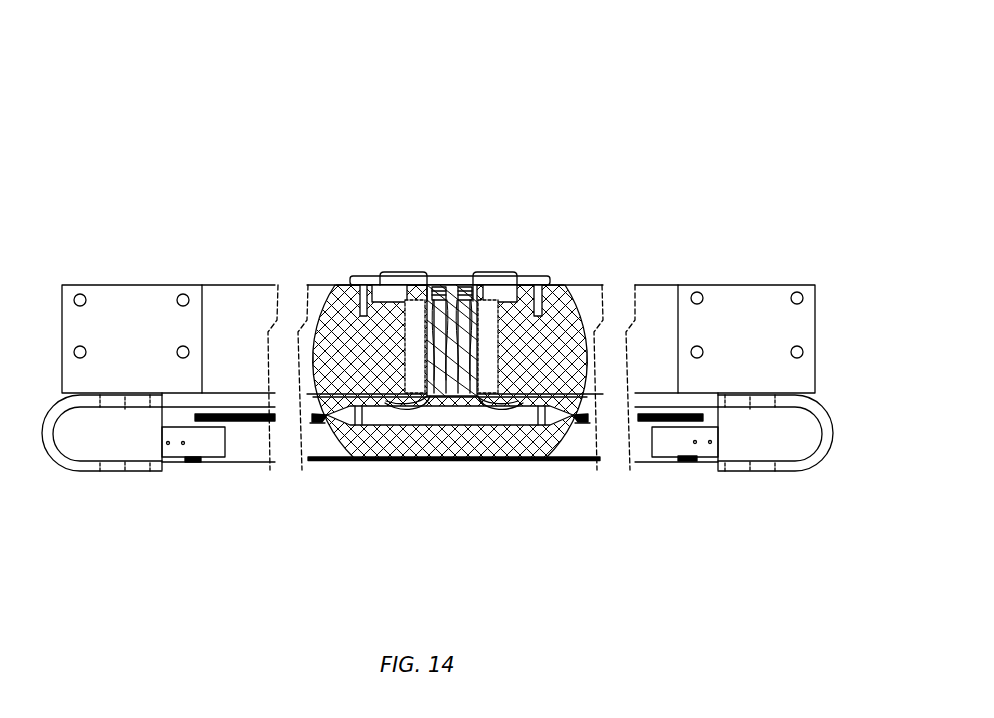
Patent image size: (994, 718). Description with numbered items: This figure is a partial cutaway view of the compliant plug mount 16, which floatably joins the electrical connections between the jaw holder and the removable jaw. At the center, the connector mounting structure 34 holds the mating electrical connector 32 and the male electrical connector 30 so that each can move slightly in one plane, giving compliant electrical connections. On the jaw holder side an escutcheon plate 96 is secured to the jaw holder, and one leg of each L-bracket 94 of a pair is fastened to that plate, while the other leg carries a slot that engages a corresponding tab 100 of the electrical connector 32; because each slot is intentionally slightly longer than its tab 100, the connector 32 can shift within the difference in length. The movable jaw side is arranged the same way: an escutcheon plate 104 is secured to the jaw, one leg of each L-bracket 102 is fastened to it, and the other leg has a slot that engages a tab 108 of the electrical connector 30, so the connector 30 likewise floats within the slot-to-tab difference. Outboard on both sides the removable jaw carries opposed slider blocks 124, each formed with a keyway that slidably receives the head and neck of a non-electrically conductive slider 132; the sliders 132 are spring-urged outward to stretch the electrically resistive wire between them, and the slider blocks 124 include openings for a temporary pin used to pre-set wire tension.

The compliant plug mount 16 is at (522, 115).
The connector mounting structure 34 is at (568, 172).
The electrical connector 32 is at (440, 327).
The male electrical connector 30 is at (440, 347).
The L-bracket 94 is at (393, 280).
The escutcheon plate 96 is at (543, 280).
The tab 100 is at (432, 318).
The L-bracket 102 is at (417, 408).
The escutcheon plate 104 is at (447, 393).
The tab 108 is at (420, 375).
The slider block 124 is at (175, 458).
The slider 132 is at (182, 463).